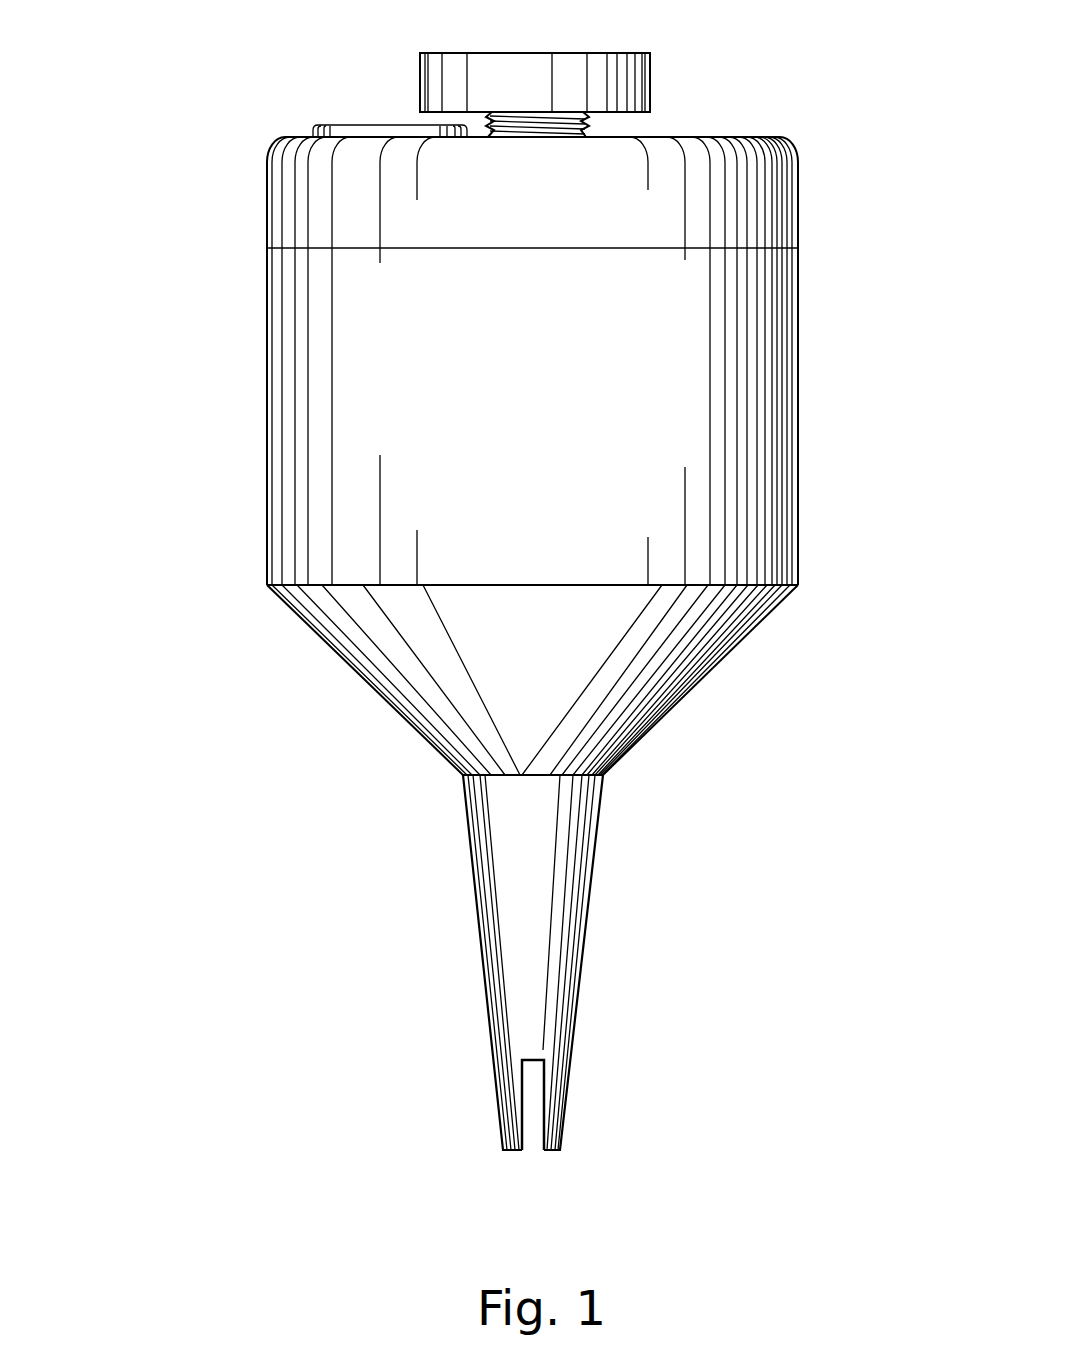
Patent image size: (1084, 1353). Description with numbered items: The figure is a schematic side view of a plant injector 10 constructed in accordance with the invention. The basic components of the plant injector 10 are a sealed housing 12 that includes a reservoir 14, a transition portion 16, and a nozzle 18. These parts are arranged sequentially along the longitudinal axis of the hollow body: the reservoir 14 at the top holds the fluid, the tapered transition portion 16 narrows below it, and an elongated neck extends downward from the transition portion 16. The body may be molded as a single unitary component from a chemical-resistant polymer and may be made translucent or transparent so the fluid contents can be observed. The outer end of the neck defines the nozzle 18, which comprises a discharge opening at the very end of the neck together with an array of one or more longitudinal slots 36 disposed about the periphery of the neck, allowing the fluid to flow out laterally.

The plant injector 10 is at (892, 118).
The sealed housing 12 is at (168, 9).
The reservoir 14 is at (800, 415).
The transition portion 16 is at (688, 693).
The nozzle 18 is at (567, 1105).
The longitudinal slot 36 is at (528, 1128).